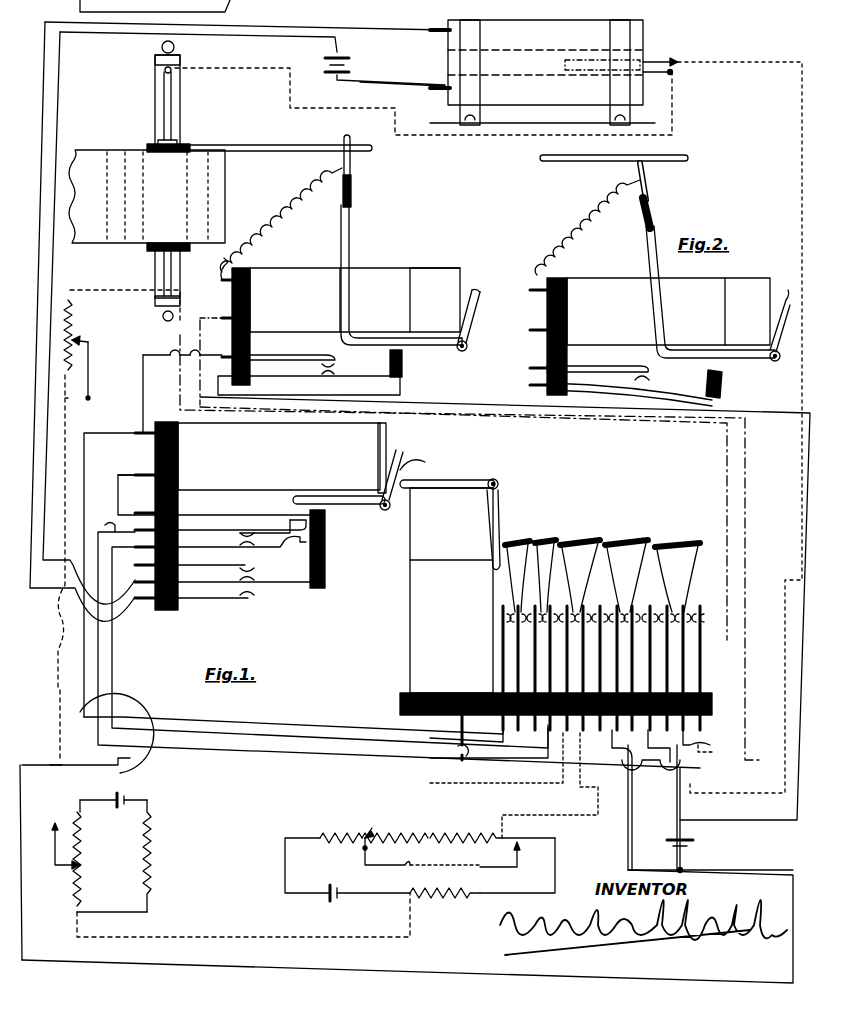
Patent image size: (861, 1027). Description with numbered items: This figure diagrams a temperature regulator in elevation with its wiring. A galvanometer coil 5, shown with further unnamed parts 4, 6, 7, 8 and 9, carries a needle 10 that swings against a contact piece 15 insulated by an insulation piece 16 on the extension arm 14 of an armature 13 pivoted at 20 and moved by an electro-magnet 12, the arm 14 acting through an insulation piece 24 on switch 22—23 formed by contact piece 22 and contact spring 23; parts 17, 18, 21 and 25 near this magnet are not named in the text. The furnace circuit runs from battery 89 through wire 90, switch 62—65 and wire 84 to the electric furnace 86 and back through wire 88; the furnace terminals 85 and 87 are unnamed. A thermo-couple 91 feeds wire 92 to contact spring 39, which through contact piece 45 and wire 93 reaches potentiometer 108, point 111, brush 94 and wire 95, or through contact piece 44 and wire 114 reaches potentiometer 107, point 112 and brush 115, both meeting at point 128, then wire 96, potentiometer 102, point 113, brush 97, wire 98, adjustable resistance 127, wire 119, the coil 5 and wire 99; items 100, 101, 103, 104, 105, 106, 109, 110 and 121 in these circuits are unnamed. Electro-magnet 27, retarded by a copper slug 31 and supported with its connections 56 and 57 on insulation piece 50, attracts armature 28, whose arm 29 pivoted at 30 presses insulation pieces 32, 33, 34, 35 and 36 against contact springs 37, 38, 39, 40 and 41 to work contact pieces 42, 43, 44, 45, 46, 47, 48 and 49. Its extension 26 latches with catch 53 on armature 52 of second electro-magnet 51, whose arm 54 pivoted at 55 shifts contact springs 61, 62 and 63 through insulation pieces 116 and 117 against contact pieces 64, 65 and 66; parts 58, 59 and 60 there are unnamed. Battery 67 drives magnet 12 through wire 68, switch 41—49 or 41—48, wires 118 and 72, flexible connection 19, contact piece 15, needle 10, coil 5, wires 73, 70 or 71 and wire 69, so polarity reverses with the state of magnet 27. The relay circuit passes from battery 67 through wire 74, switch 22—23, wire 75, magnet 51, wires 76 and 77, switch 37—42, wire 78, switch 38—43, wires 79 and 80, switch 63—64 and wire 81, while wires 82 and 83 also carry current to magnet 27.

In FIG. 1, the housing 4 is at (226, 205).
In FIG. 1, the galvanometer coil 5 is at (147, 148).
In FIG. 1, the post 6 is at (181, 102).
In FIG. 1, the lower post 7 is at (174, 274).
In FIG. 1, the rod 8 is at (162, 104).
In FIG. 1, the lower winding 9 is at (160, 270).
In FIG. 1, the galvanometer needle 10 is at (288, 146).
In FIG. 2, the galvanometer needle 10 is at (586, 162).
In FIG. 1, the electro-magnet 12 is at (386, 270).
In FIG. 2, the electro-magnet 12 is at (650, 336).
In FIG. 1, the armature 13 is at (477, 312).
In FIG. 2, the armature 13 is at (790, 290).
In FIG. 1, the extension arm 14 is at (341, 245).
In FIG. 2, the extension arm 14 is at (650, 264).
In FIG. 1, the electric contact piece 15 is at (351, 162).
In FIG. 2, the electric contact piece 15 is at (649, 180).
In FIG. 1, the insulation piece 16 is at (352, 192).
In FIG. 2, the insulation piece 16 is at (652, 210).
In FIG. 1, the terminal 17 is at (224, 283).
In FIG. 1, the terminal 18 is at (220, 313).
In FIG. 1, the flexible connection 19 is at (308, 192).
In FIG. 2, the flexible connection 19 is at (572, 228).
In FIG. 1, the pivot 20 is at (468, 350).
In FIG. 1, the terminal 21 is at (252, 346).
In FIG. 1, the contact piece 22 is at (290, 358).
In FIG. 2, the contact piece 22 is at (618, 370).
In FIG. 1, the contact spring 23 is at (302, 380).
In FIG. 2, the contact spring 23 is at (620, 390).
In FIG. 1, the insulation piece 24 is at (403, 360).
In FIG. 2, the insulation piece 24 is at (722, 386).
In FIG. 1, the coil section 25 is at (428, 270).
In FIG. 1, the extension 26 is at (430, 470).
In FIG. 1, the electro-magnet 27 is at (410, 640).
In FIG. 1, the armature 28 is at (450, 480).
In FIG. 1, the arm 29 is at (498, 512).
In FIG. 1, the pivot 30 is at (499, 482).
In FIG. 1, the copper slug 31 is at (412, 530).
In FIG. 1, the insulation piece 32 is at (520, 542).
In FIG. 1, the insulation piece 33 is at (548, 540).
In FIG. 1, the insulation piece 34 is at (580, 540).
In FIG. 1, the insulation piece 35 is at (618, 540).
In FIG. 1, the insulation piece 36 is at (672, 542).
In FIG. 1, the contact spring 37 is at (520, 584).
In FIG. 1, the contact spring 38 is at (546, 592).
In FIG. 1, the contact spring 39 is at (590, 598).
In FIG. 1, the contact spring 40 is at (645, 596).
In FIG. 1, the contact spring 41 is at (690, 598).
In FIG. 1, the contact piece 42 is at (504, 658).
In FIG. 1, the contact piece 43 is at (552, 610).
In FIG. 1, the contact piece 44 is at (572, 606).
In FIG. 1, the contact piece 45 is at (626, 596).
In FIG. 1, the contact piece 46 is at (624, 602).
In FIG. 1, the contact piece 47 is at (673, 598).
In FIG. 1, the contact piece 48 is at (674, 602).
In FIG. 1, the contact piece 49 is at (722, 604).
In FIG. 1, the insulation piece 50 is at (400, 700).
In FIG. 1, the second electro-magnet 51 is at (270, 516).
In FIG. 1, the armature 52 is at (408, 440).
In FIG. 1, the catch 53 is at (417, 452).
In FIG. 1, the arm 54 is at (293, 500).
In FIG. 1, the pivot 55 is at (385, 510).
In FIG. 1, the magnet connection 56 is at (460, 727).
In FIG. 1, the magnet connection 57 is at (465, 727).
In FIG. 1, the terminal 58 is at (152, 438).
In FIG. 1, the terminal 59 is at (154, 480).
In FIG. 1, the contact spring 60 is at (176, 503).
In FIG. 1, the contact spring 61 is at (245, 516).
In FIG. 1, the contact spring 62 is at (276, 588).
In FIG. 1, the contact spring 63 is at (280, 546).
In FIG. 1, the contact piece 64 is at (248, 538).
In FIG. 1, the contact piece 65 is at (255, 568).
In FIG. 1, the contact piece 66 is at (234, 602).
In FIG. 1, the battery 67 is at (690, 846).
In FIG. 1, the wire 68 is at (680, 800).
In FIG. 1, the wire 69 is at (630, 845).
In FIG. 1, the wire 70 is at (641, 750).
In FIG. 1, the wire 71 is at (672, 765).
In FIG. 1, the wire 72 is at (505, 400).
In FIG. 1, the wire 73 is at (178, 330).
In FIG. 1, the wire 74 is at (405, 402).
In FIG. 1, the wire 75 is at (143, 395).
In FIG. 1, the wire 76 is at (118, 504).
In FIG. 1, the wire 77 is at (114, 640).
In FIG. 1, the wire 78 is at (524, 740).
In FIG. 1, the wire 79 is at (526, 760).
In FIG. 1, the wire 80 is at (102, 663).
In FIG. 1, the wire 81 is at (128, 620).
In FIG. 1, the wire 82 is at (88, 483).
In FIG. 1, the wire 83 is at (470, 752).
In FIG. 1, the wire 84 is at (365, 28).
In FIG. 1, the terminal 85 is at (440, 28).
In FIG. 1, the electric furnace 86 is at (560, 22).
In FIG. 1, the terminal 87 is at (443, 86).
In FIG. 1, the wire 88 is at (398, 84).
In FIG. 1, the battery 89 is at (349, 65).
In FIG. 1, the wire 90 is at (250, 38).
In FIG. 1, the thermo-couple 91 is at (560, 58).
In FIG. 1, the wire 92 is at (768, 792).
In FIG. 1, the wire 93 is at (566, 818).
In FIG. 1, the adjustable brush 94 is at (517, 864).
In FIG. 1, the wire 95 is at (436, 866).
In FIG. 1, the wire 96 is at (280, 942).
In FIG. 1, the adjustable brush 97 is at (54, 848).
In FIG. 1, the wire 98 is at (58, 690).
In FIG. 1, the wire 99 is at (270, 70).
In FIG. 1, the battery 100 is at (130, 792).
In FIG. 1, the conductor 101 is at (102, 808).
In FIG. 1, the variable potentiometer 102 is at (96, 859).
In FIG. 1, the conductor 103 is at (130, 910).
In FIG. 1, the resistor 104 is at (150, 873).
In FIG. 1, the battery 105 is at (332, 904).
In FIG. 1, the conductor 106 is at (287, 860).
In FIG. 1, the variable potentiometer 107 is at (358, 830).
In FIG. 1, the variable potentiometer 108 is at (490, 836).
In FIG. 1, the conductor 109 is at (553, 890).
In FIG. 1, the resistor 110 is at (476, 898).
In FIG. 1, the point 111 is at (505, 838).
In FIG. 1, the point 112 is at (374, 832).
In FIG. 1, the point 113 is at (75, 912).
In FIG. 1, the wire 114 is at (478, 788).
In FIG. 1, the adjustable brush 115 is at (358, 860).
In FIG. 1, the insulation piece 116 is at (328, 526).
In FIG. 1, the insulation piece 117 is at (326, 572).
In FIG. 1, the wire 118 is at (712, 738).
In FIG. 1, the wire 119 is at (108, 290).
In FIG. 1, the slider 121 is at (90, 357).
In FIG. 1, the adjustable resistance 127 is at (74, 334).
In FIG. 1, the point 128 is at (405, 850).